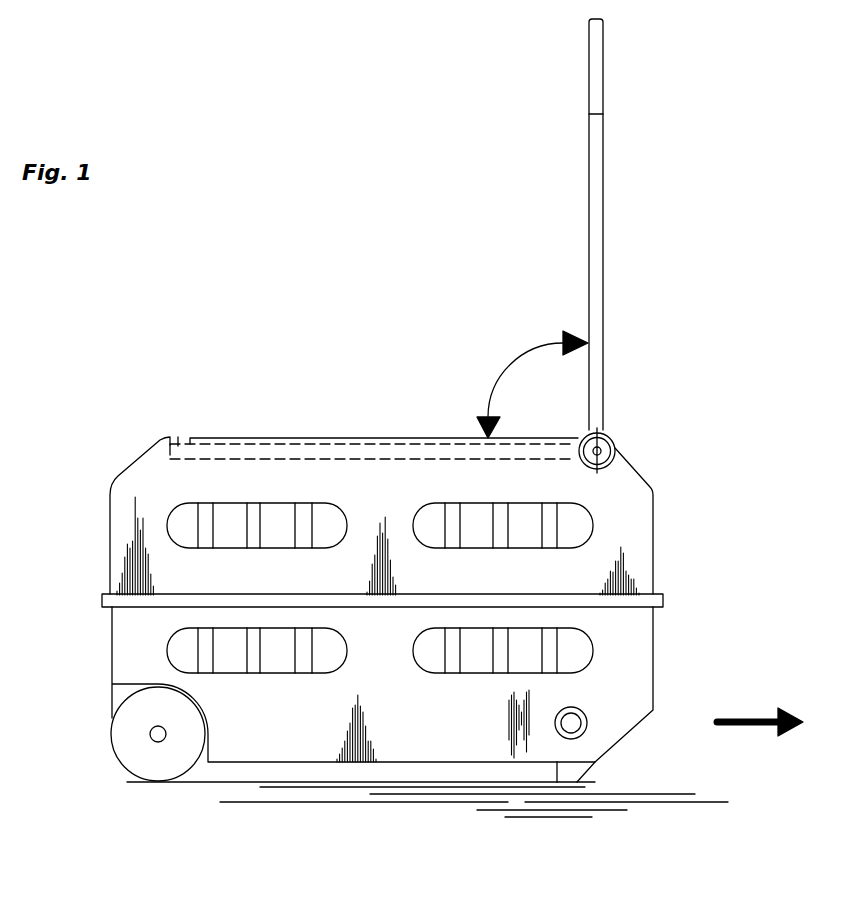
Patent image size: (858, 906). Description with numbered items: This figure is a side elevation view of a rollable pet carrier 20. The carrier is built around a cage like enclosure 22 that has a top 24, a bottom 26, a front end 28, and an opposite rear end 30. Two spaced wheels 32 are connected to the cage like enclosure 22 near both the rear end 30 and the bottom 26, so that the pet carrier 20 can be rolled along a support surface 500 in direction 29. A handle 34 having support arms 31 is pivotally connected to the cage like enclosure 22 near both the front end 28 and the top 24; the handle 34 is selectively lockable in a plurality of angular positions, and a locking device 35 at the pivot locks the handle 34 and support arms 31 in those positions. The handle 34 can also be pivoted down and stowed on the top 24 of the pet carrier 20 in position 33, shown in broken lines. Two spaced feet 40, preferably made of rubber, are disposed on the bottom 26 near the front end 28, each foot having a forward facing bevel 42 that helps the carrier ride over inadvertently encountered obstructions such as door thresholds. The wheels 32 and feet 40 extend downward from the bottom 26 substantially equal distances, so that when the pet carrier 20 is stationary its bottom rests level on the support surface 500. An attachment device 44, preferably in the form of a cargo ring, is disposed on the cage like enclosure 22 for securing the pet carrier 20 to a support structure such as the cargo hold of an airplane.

The pet carrier 20 is at (797, 260).
The cage like enclosure 22 is at (345, 420).
The top 24 is at (417, 438).
The bottom 26 is at (225, 763).
The front end 28 is at (653, 558).
The direction 29 is at (752, 718).
The rear end 30 is at (110, 580).
The support arms 31 is at (593, 237).
The wheels 32 is at (130, 731).
The position 33 is at (177, 438).
The handle 34 is at (588, 36).
The locking device 35 is at (615, 447).
The feet 40 is at (568, 770).
The forward facing bevel 42 is at (593, 767).
The attachment device 44 is at (587, 723).
The support surface 500 is at (452, 808).